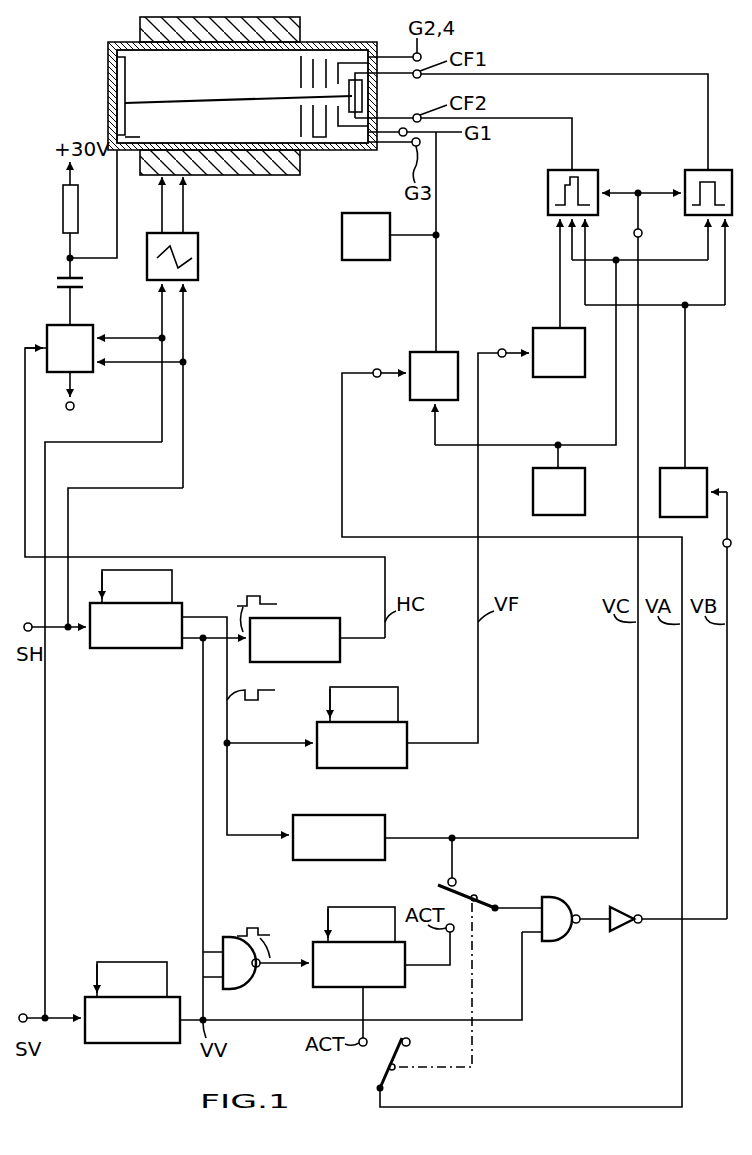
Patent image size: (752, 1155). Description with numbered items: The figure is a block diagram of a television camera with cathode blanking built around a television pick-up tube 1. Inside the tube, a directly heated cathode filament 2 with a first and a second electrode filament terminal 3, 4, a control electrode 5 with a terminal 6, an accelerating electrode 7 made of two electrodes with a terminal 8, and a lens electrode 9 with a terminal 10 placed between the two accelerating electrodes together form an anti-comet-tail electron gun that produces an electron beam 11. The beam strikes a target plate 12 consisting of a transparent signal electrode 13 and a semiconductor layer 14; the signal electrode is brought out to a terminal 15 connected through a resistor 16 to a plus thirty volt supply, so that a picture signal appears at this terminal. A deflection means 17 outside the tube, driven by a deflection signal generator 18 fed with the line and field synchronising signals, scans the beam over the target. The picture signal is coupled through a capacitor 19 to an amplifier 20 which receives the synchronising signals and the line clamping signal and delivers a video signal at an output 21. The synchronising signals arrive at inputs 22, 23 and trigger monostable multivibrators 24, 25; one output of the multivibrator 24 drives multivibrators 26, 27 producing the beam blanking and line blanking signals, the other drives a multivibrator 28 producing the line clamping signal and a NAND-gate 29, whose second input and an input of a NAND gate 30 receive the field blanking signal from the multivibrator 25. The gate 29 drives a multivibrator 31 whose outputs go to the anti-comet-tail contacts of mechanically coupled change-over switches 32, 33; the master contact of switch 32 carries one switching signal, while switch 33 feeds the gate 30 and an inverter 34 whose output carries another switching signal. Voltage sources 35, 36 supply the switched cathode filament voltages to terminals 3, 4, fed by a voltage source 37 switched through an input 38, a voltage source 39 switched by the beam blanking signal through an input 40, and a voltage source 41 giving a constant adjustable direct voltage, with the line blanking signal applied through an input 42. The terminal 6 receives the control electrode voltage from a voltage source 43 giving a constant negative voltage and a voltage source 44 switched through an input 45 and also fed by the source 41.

The television pick-up tube 1 is at (313, 152).
The directly heated cathode filament 2 is at (362, 92).
The first electrode filament terminal 3 is at (388, 72).
The second electrode filament terminal 4 is at (388, 118).
The control electrode 5 is at (357, 62).
The terminal 6 is at (386, 140).
The accelerating electrode 7 is at (300, 63).
The terminal 8 is at (389, 55).
The lens electrode 9 is at (312, 118).
The terminal 10 is at (405, 145).
The electron beam 11 is at (219, 96).
The target plate 12 is at (152, 73).
The signal electrode 13 is at (127, 137).
The semiconductor layer 14 is at (126, 119).
The terminal 15 is at (118, 177).
The resistor 16 is at (78, 220).
The deflection means 17 is at (295, 38).
The deflection signal generator 18 is at (199, 269).
The capacitor 19 is at (81, 286).
The amplifier 20 is at (90, 373).
The output 21 is at (75, 406).
The input 22 is at (28, 622).
The input 23 is at (23, 1013).
The monostable multivibrator 24 is at (133, 649).
The monostable multivibrator 25 is at (130, 1044).
The multivibrator 26 is at (316, 759).
The multivibrator 27 is at (305, 856).
The multivibrator 28 is at (341, 652).
The NAND-gate 29 is at (249, 982).
The NAND gate 30 is at (560, 940).
The multivibrator 31 is at (406, 979).
The change-over switch 32 is at (383, 1061).
The change-over switch 33 is at (462, 889).
The inverter 34 is at (633, 929).
The voltage source 35 is at (700, 170).
The voltage source 36 is at (565, 170).
The voltage source 37 is at (700, 468).
The input 38 is at (724, 547).
The voltage source 39 is at (552, 328).
The input 40 is at (503, 349).
The voltage source 41 is at (585, 488).
The input 42 is at (643, 233).
The voltage source 43 is at (365, 261).
The voltage source 44 is at (429, 352).
The input 45 is at (377, 369).